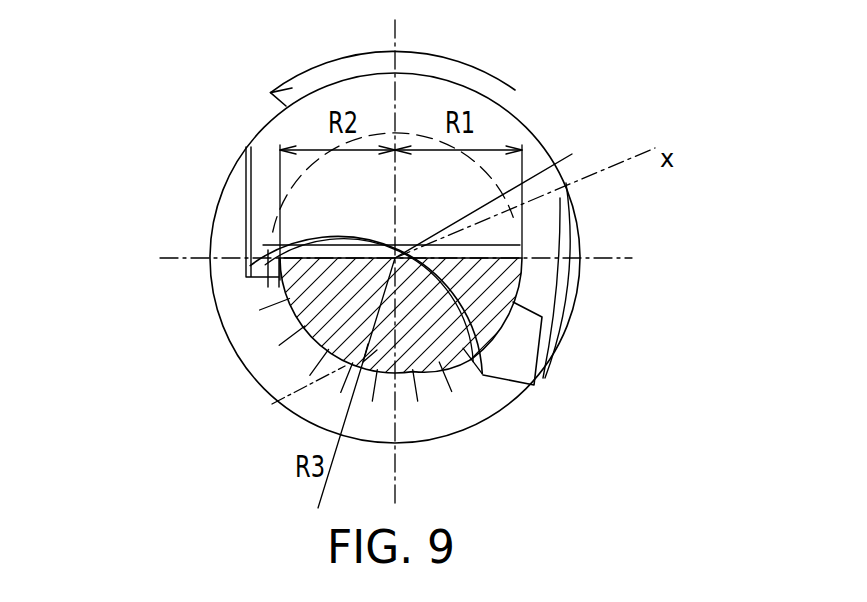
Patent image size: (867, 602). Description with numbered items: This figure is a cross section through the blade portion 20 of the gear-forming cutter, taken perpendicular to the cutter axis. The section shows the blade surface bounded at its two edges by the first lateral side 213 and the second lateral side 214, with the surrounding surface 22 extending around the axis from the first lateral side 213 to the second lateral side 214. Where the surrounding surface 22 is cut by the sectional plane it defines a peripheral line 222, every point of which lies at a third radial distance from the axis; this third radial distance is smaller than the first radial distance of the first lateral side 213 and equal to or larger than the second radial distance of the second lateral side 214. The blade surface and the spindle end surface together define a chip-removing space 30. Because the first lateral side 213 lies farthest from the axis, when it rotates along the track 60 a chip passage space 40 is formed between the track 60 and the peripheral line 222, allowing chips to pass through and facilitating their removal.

The blade portion 20 is at (289, 361).
The surrounding surface 22 is at (468, 372).
The peripheral line 222 is at (432, 386).
The chip-removing space 30 is at (349, 242).
The chip passage space 40 is at (268, 405).
The track 60 is at (570, 163).
The first lateral side 213 is at (527, 257).
The second lateral side 214 is at (270, 277).